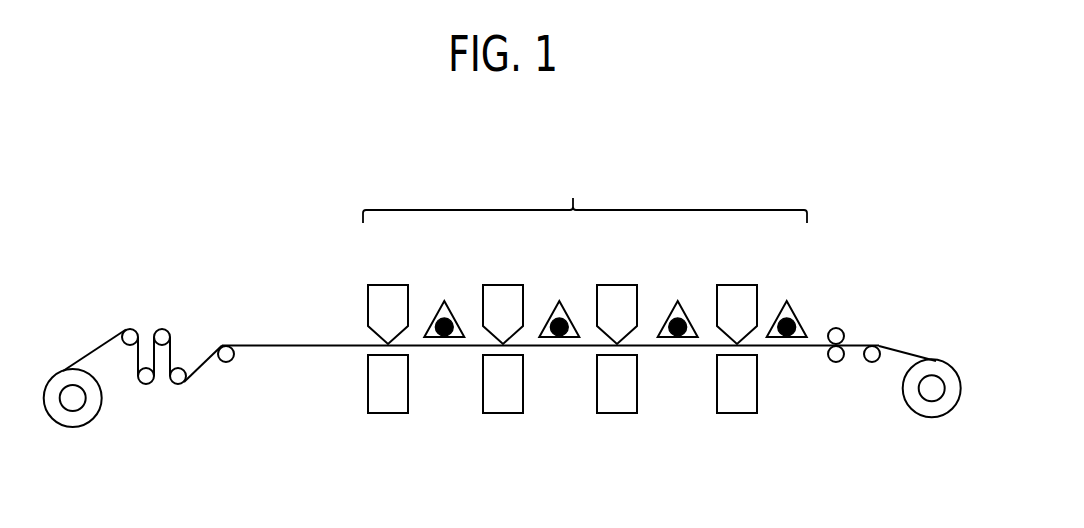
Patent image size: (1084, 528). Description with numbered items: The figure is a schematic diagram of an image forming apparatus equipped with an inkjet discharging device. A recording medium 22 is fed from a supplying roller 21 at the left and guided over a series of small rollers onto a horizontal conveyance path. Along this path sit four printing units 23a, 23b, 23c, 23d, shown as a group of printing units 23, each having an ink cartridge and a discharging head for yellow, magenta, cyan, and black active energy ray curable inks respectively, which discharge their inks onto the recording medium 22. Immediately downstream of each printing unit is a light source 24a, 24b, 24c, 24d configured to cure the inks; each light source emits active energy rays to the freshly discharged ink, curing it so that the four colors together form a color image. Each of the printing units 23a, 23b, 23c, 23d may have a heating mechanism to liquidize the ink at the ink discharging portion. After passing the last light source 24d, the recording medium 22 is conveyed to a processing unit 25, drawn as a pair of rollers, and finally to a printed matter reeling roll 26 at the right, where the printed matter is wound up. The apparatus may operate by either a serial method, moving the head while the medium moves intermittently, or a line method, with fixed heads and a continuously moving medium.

The supplying roller 21 is at (71, 402).
The recording medium 22 is at (276, 343).
The printing units 23 is at (585, 194).
The printing unit 23a is at (389, 293).
The printing unit 23b is at (503, 293).
The printing unit 23c is at (619, 293).
The printing unit 23d is at (739, 293).
The light source 24a is at (453, 317).
The light source 24b is at (568, 317).
The light source 24c is at (686, 317).
The light source 24d is at (795, 317).
The processing unit 25 is at (838, 323).
The printed matter reeling roll 26 is at (928, 392).